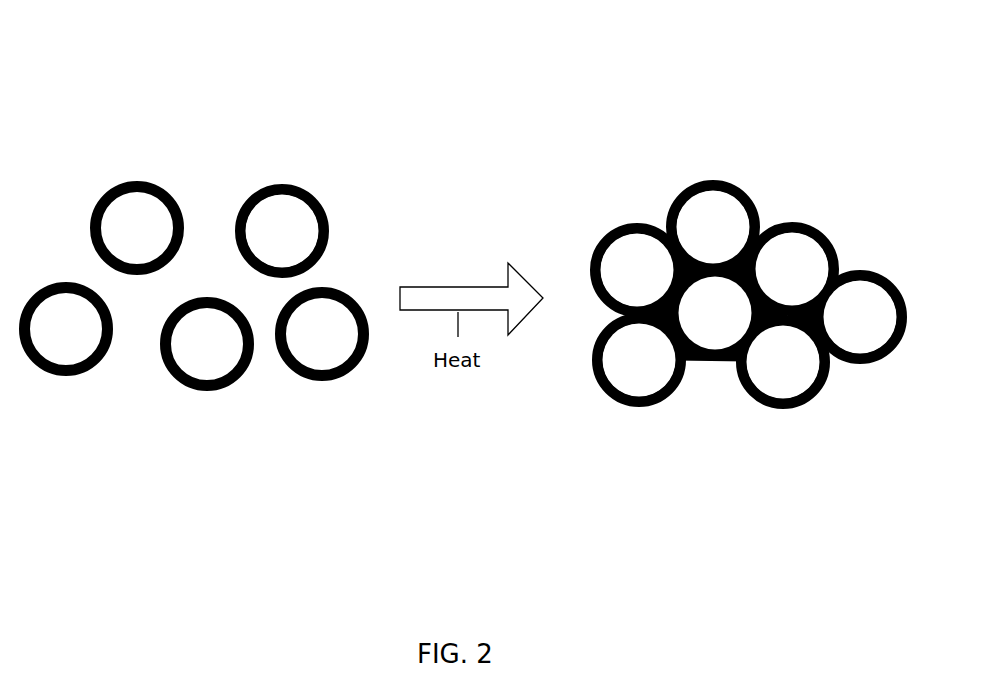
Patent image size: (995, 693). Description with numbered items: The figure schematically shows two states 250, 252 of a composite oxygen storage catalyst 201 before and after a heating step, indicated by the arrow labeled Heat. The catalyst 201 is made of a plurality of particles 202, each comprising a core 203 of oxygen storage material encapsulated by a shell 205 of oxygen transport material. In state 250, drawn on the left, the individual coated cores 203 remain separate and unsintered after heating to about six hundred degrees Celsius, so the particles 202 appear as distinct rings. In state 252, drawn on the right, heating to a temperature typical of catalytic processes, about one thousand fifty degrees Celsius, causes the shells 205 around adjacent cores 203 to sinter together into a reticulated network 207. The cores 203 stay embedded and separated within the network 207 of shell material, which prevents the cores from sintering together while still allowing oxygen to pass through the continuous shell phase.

The composite oxygen storage catalyst 201 is at (133, 453).
The particle 202 is at (331, 226).
The core 203 is at (281, 216).
The shell 205 is at (310, 189).
The reticulated network 207 is at (826, 246).
The state 250 is at (185, 80).
The state 252 is at (750, 82).